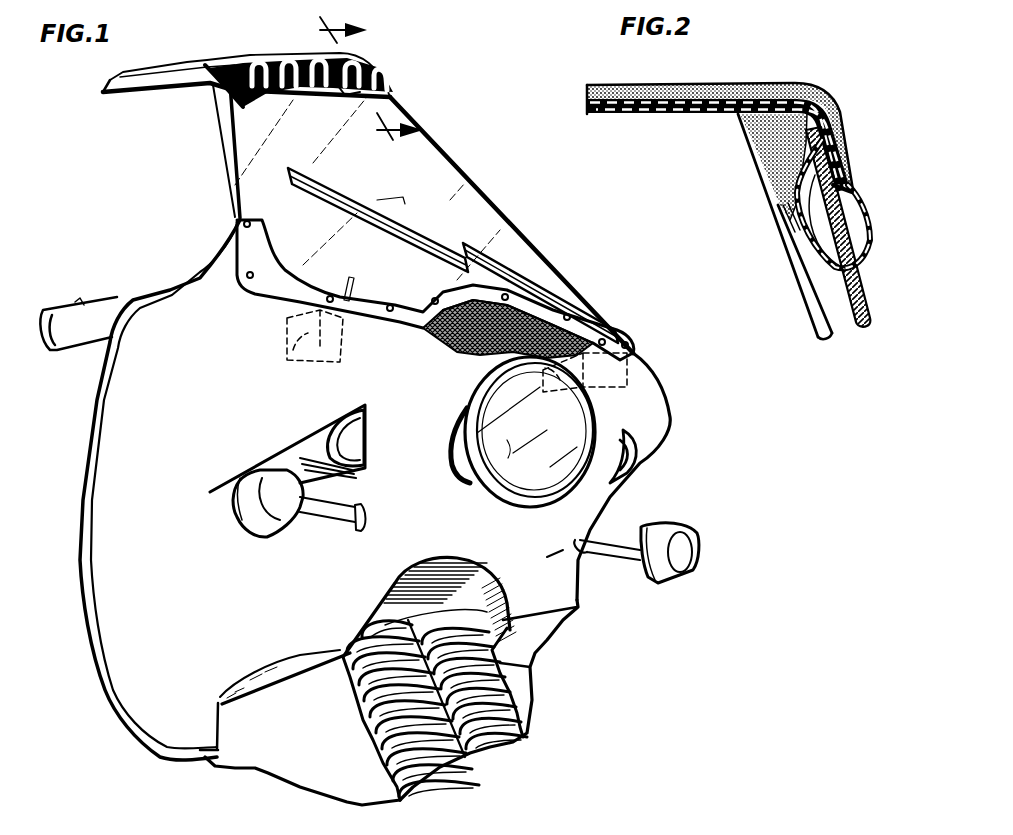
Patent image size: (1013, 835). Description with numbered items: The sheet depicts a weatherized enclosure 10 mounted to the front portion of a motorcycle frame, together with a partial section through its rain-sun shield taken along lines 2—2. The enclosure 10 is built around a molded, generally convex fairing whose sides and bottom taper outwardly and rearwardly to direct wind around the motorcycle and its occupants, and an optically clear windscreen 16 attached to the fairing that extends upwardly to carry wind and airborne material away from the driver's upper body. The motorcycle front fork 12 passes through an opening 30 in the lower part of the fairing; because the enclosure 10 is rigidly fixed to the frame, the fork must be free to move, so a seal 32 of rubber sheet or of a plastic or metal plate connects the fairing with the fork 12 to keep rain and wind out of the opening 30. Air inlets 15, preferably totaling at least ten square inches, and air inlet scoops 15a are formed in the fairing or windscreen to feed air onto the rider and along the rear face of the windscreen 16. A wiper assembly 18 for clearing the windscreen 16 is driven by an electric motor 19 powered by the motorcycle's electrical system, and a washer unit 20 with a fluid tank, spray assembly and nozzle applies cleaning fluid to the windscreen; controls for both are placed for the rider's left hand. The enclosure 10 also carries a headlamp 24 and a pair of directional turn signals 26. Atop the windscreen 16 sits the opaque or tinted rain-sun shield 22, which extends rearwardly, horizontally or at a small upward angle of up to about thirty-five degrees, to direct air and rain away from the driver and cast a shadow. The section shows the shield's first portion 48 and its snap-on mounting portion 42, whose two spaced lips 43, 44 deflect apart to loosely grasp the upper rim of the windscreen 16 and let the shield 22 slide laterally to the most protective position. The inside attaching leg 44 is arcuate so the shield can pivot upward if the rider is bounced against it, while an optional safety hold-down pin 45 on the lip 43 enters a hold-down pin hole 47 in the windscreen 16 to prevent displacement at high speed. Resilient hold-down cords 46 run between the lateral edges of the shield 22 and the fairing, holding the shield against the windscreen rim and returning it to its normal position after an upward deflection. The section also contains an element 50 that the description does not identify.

In FIG. 1, the enclosure 10 is at (667, 447).
In FIG. 1, the motorcycle front fork 12 is at (530, 700).
In FIG. 1, the air inlets 15 is at (457, 356).
In FIG. 1, the air inlet scoops 15a is at (247, 474).
In FIG. 1, the windscreen 16 is at (447, 173).
In FIG. 2, the windscreen 16 is at (870, 293).
In FIG. 1, the wiper assembly 18 is at (463, 242).
In FIG. 1, the electric motor 19 is at (630, 377).
In FIG. 1, the washer unit 20 is at (293, 367).
In FIG. 1, the rain-sun shield 22 is at (168, 63).
In FIG. 1, the headlamp 24 is at (510, 455).
In FIG. 1, the directional turn signals 26 is at (265, 537).
In FIG. 1, the opening 30 is at (578, 608).
In FIG. 1, the seal 32 is at (358, 612).
In FIG. 1, the section lines 2 is at (382, 77).
In FIG. 2, the mounting portion 42 is at (879, 177).
In FIG. 2, the lip portion 43 is at (877, 233).
In FIG. 2, the inside attaching leg 44 is at (810, 247).
In FIG. 1, the safety hold-down pin 45 is at (343, 90).
In FIG. 2, the safety hold-down pin 45 is at (843, 187).
In FIG. 1, the hold-down cords 46 is at (216, 120).
In FIG. 2, the hold-down cords 46 is at (813, 300).
In FIG. 2, the hold-down pin hole 47 is at (853, 183).
In FIG. 1, the first portion 48 is at (260, 76).
In FIG. 2, the first portion 48 is at (750, 90).
In FIG. 2, the padding 50 is at (767, 157).